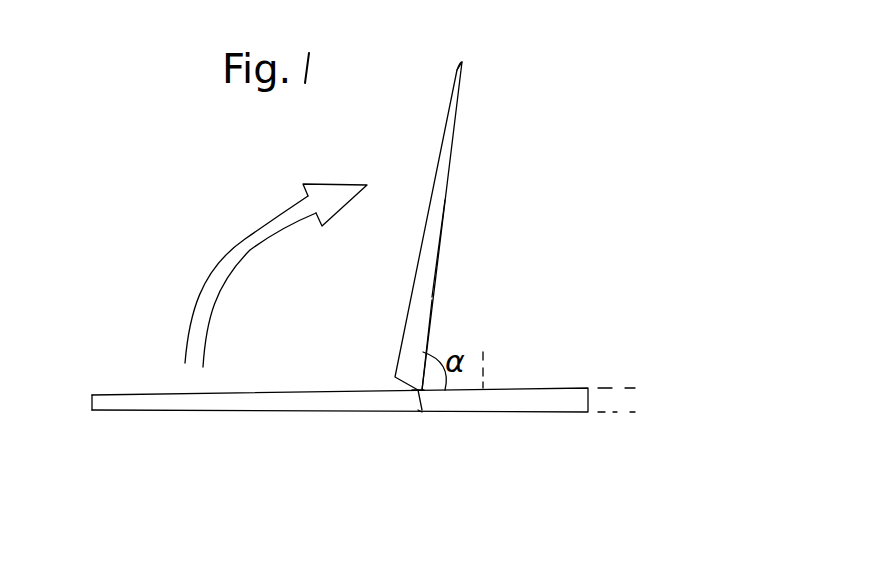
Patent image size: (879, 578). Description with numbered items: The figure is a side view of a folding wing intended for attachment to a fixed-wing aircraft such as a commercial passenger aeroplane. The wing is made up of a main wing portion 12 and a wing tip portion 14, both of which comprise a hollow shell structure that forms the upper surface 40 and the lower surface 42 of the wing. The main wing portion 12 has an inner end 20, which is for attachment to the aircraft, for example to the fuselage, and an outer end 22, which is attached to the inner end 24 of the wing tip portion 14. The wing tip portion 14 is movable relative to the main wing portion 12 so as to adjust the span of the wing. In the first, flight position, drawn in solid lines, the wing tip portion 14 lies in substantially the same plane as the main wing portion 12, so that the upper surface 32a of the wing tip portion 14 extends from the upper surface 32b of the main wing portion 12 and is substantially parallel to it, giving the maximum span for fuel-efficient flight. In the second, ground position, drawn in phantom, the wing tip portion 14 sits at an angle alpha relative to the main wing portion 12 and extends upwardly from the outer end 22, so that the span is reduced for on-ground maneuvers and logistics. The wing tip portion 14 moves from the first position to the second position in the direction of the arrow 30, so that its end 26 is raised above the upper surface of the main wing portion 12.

The main wing portion 12 is at (538, 412).
The wing tip portion 14 is at (445, 223).
The inner end 20 is at (650, 398).
The outer end 22 is at (420, 405).
The inner end 24 is at (417, 407).
The end 26 is at (465, 55).
The arrow 30 is at (232, 253).
The upper surface 32a is at (428, 317).
The upper surface 32b is at (432, 297).
The upper surface 40 is at (555, 337).
The lower surface 42 is at (418, 421).